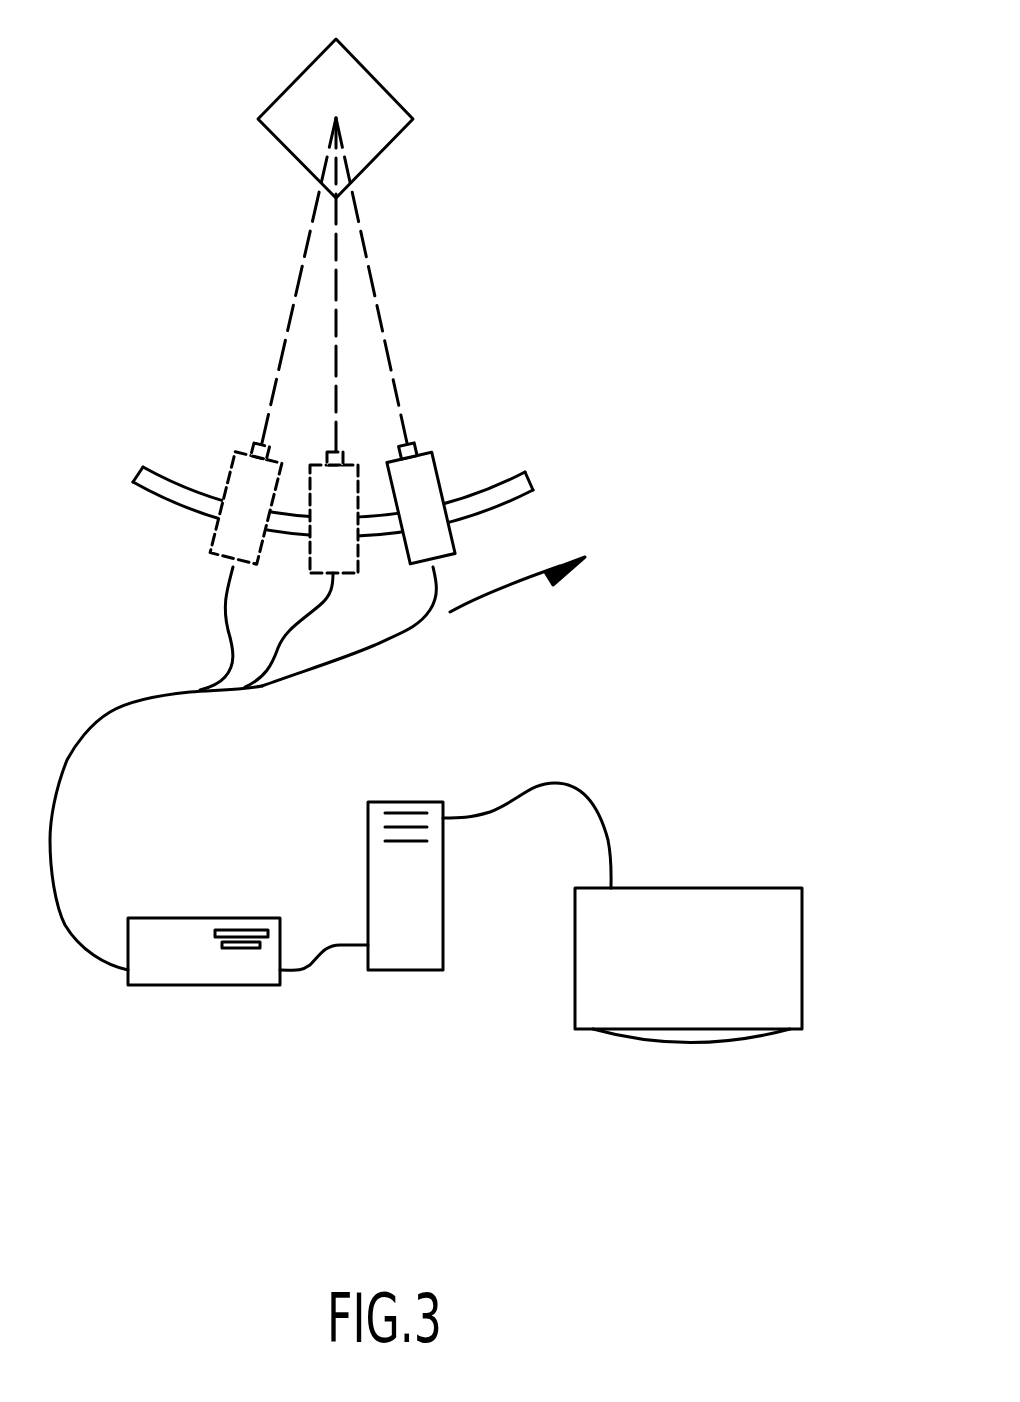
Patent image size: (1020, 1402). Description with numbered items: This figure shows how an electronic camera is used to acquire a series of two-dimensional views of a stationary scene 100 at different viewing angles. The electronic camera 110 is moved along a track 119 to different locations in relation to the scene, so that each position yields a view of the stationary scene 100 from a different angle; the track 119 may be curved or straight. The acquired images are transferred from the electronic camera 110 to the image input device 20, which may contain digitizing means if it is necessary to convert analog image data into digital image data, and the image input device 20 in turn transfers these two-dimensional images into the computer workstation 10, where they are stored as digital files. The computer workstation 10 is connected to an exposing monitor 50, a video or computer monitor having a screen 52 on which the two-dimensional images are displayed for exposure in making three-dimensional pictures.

The stationary scene 100 is at (370, 92).
The electronic camera 110 is at (446, 545).
The track 119 is at (528, 473).
The image input device 20 is at (155, 925).
The computer workstation 10 is at (428, 935).
The exposing monitor 50 is at (783, 898).
The screen 52 is at (710, 1037).